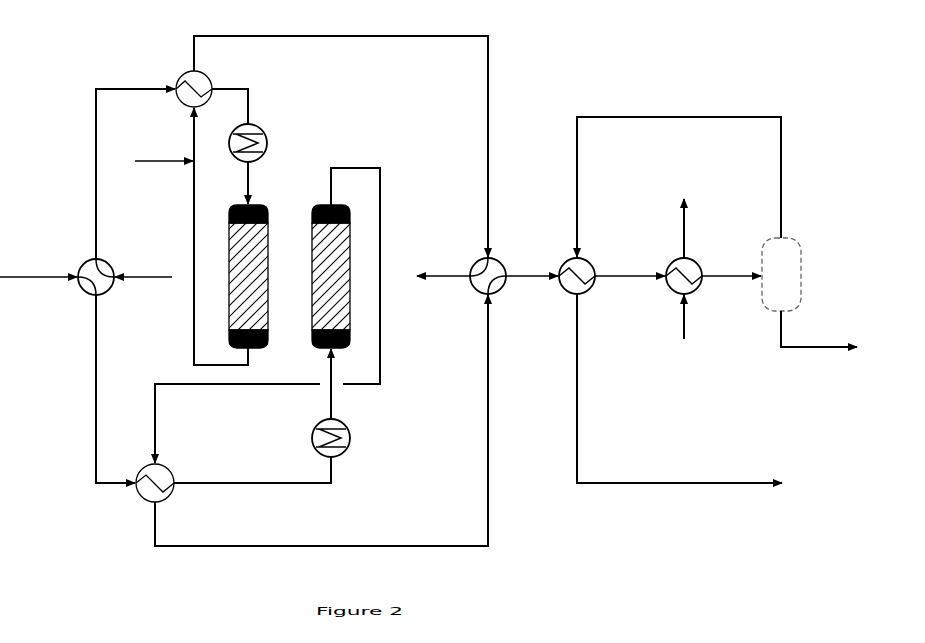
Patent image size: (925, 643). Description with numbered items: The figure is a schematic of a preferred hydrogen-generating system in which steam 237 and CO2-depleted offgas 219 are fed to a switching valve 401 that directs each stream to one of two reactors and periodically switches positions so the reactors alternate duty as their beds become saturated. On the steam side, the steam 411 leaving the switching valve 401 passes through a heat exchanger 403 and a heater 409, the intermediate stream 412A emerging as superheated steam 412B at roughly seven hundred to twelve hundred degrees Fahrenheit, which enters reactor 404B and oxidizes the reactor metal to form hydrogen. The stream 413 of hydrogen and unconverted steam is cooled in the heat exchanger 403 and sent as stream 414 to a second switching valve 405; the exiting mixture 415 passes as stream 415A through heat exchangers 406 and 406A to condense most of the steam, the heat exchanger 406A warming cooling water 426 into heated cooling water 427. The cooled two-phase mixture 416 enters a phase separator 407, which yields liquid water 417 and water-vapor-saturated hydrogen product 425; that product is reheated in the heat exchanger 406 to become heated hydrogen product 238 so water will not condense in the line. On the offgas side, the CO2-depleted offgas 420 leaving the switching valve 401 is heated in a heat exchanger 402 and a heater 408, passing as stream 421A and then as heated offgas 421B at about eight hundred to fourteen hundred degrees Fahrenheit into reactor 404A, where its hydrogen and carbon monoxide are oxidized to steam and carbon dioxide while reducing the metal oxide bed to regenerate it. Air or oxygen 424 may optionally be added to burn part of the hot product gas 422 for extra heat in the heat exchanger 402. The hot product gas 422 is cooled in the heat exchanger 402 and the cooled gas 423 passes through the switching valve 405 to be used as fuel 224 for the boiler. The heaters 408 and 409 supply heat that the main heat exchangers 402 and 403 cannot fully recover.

The steam 237 is at (38, 269).
The CO2-depleted offgas 219 is at (143, 269).
The switching valve 401 is at (109, 280).
The CO2-depleted offgas 420 is at (135, 174).
The steam 411 is at (115, 389).
The heat exchanger 402 is at (207, 86).
The air or oxygen 424 is at (164, 152).
The cooled gas 423 is at (341, 139).
The heated stream 421A is at (251, 106).
The heater 408 is at (268, 143).
The heated offgas 421B is at (269, 183).
The reactor 404A is at (247, 285).
The hot product gas 422 is at (204, 236).
The reactor 404B is at (330, 285).
The stream of hydrogen and unconverted steam 413 is at (267, 315).
The heat exchanger 403 is at (164, 489).
The heated stream 412A is at (252, 470).
The heater 409 is at (341, 446).
The superheated steam 412B is at (352, 384).
The stream 414 is at (321, 420).
The switching valve 405 is at (502, 272).
The fuel 224 is at (443, 268).
The exiting mixture 415 is at (532, 284).
The heat exchanger 406 is at (592, 274).
The water-vapor-saturated hydrogen product 425 is at (679, 187).
The heated hydrogen product 238 is at (679, 388).
The heated stream 415A is at (630, 286).
The heat exchanger 406A is at (695, 270).
The heated cooling water 427 is at (683, 219).
The cooling water 426 is at (683, 329).
The cooled two-phase mixture 416 is at (731, 285).
The phase separator 407 is at (781, 274).
The liquid water 417 is at (819, 329).